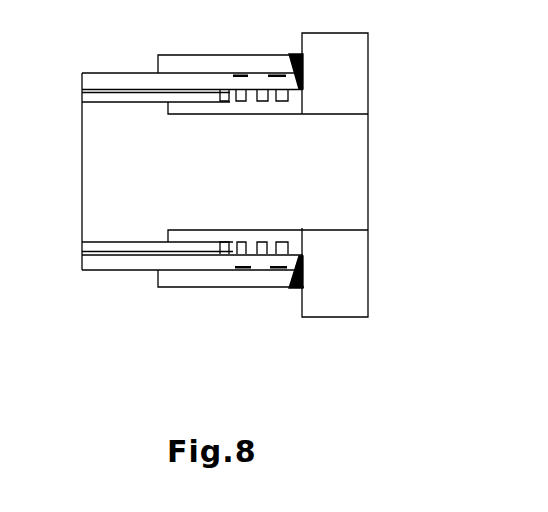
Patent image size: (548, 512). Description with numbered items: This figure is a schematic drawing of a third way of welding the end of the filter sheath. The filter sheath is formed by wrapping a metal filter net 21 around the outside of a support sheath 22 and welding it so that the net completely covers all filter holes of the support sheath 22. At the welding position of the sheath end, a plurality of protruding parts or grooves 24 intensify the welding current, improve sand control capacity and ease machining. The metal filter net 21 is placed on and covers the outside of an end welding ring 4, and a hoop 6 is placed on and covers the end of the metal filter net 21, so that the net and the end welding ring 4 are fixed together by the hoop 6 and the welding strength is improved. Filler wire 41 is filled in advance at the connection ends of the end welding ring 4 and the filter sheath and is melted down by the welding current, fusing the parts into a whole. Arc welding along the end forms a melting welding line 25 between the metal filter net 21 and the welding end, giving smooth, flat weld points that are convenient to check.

The end welding ring 4 is at (362, 60).
The filler wire 41 is at (303, 67).
The hoop 6 is at (223, 279).
The metal filter net 21 is at (95, 78).
The support sheath 22 is at (97, 98).
The protruding parts or grooves 24 is at (234, 246).
The melting welding line 25 is at (287, 73).